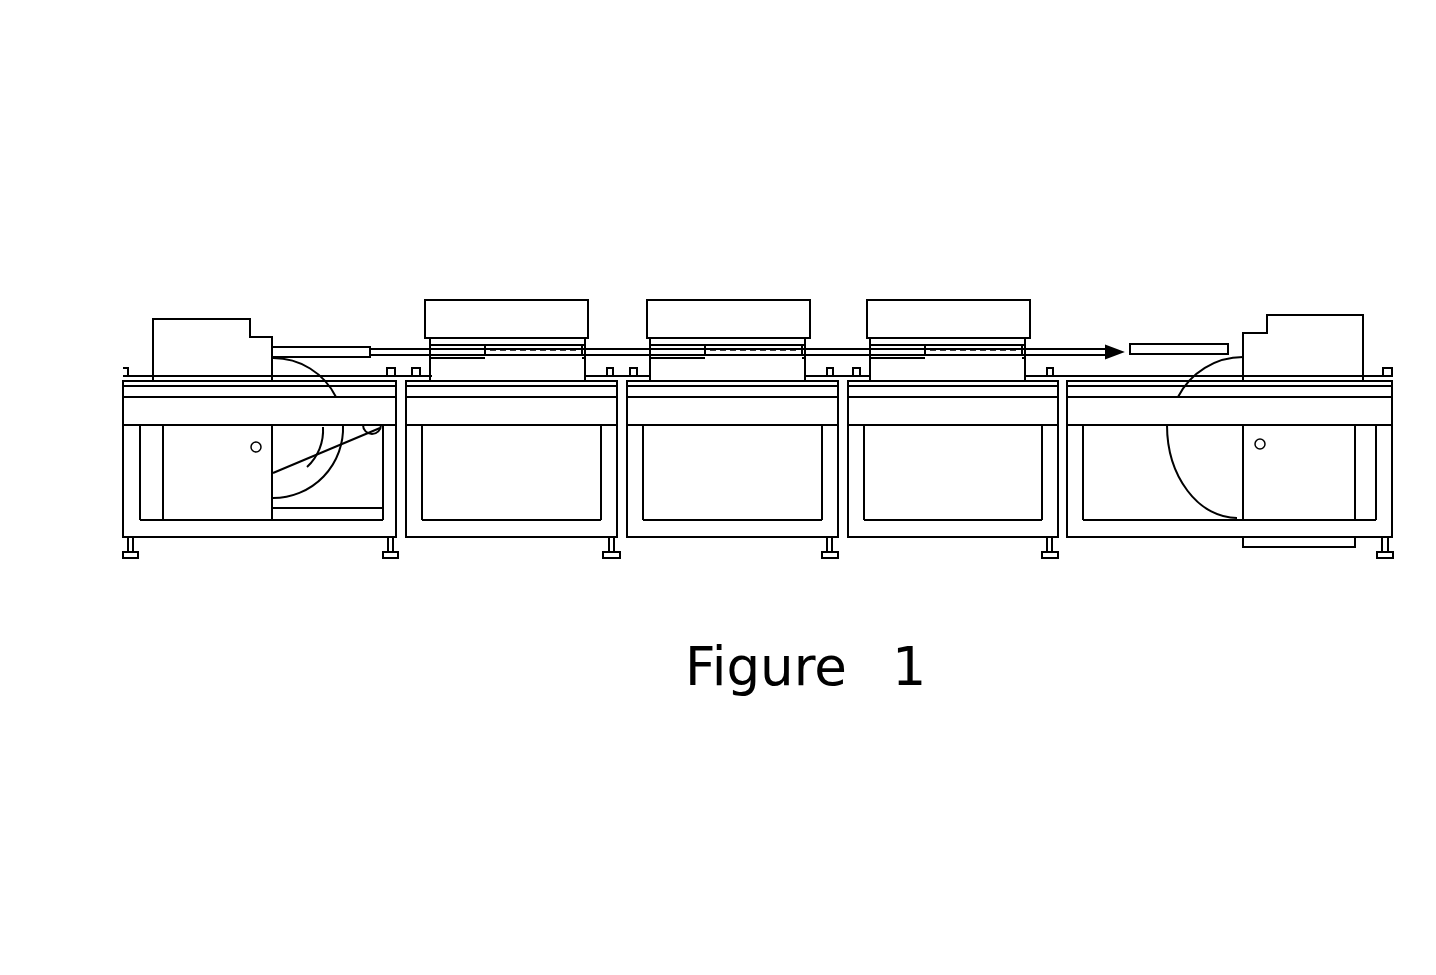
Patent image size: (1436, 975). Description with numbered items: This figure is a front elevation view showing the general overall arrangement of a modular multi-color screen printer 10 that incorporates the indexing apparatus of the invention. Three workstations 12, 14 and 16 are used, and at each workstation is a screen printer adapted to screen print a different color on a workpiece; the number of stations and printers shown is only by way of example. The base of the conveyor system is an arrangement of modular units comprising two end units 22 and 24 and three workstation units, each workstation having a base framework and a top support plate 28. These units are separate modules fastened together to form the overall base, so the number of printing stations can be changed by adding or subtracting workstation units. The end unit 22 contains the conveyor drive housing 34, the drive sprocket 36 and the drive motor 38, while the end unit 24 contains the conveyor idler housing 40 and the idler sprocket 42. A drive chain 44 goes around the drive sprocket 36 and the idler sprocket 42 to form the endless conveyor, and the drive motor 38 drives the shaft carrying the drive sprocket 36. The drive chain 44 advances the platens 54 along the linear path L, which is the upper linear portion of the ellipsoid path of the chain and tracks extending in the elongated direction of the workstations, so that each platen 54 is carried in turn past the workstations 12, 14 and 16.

The modular multi-color screen printer 10 is at (1302, 128).
The workstation 12 is at (555, 293).
The workstation 14 is at (761, 293).
The workstation 16 is at (990, 293).
The end unit 22 is at (188, 527).
The end unit 24 is at (1147, 523).
The top support plate 28 is at (757, 488).
The conveyor drive housing 34 is at (168, 333).
The drive sprocket 36 is at (290, 482).
The drive motor 38 is at (372, 435).
The conveyor idler housing 40 is at (1315, 328).
The idler sprocket 42 is at (1202, 457).
The drive chain 44 is at (415, 352).
The platen 54 is at (1183, 343).
The linear path L is at (1100, 348).